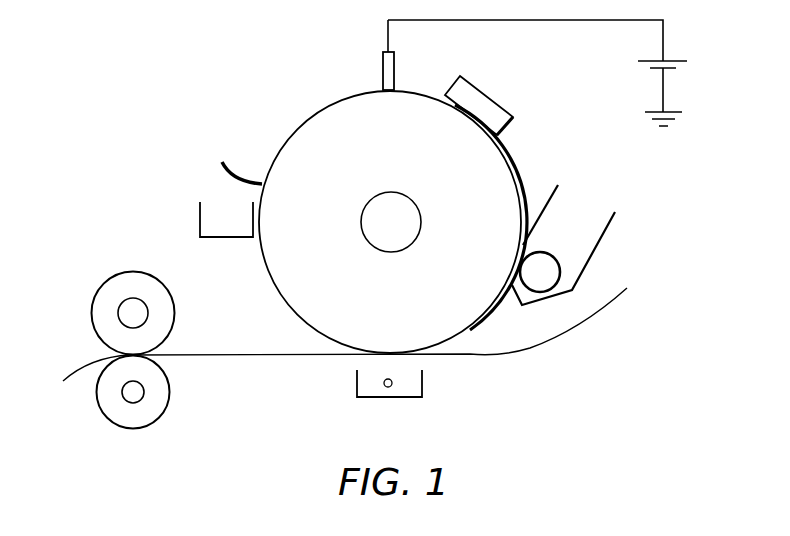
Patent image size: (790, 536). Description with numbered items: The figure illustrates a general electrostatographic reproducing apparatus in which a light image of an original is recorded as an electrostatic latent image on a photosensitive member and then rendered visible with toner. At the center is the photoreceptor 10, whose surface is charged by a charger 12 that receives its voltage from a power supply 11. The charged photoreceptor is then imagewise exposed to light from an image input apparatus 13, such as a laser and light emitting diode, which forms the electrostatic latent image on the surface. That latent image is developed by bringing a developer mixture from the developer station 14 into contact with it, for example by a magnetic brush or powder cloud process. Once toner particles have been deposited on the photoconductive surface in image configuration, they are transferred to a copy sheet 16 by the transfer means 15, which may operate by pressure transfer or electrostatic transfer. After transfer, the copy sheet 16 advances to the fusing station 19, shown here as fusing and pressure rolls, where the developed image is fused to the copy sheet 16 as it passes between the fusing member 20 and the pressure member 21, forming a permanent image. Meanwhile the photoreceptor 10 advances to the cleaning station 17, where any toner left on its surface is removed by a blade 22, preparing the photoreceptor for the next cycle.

The photoreceptor 10 is at (518, 159).
The power supply 11 is at (665, 48).
The charger 12 is at (380, 80).
The image input apparatus 13 is at (492, 97).
The developer station 14 is at (573, 219).
The transfer means 15 is at (425, 378).
The copy sheet 16 is at (580, 322).
The cleaning station 17 is at (207, 176).
The fusing station 19 is at (127, 329).
The fusing member 20 is at (168, 305).
The pressure member 21 is at (168, 390).
The blade 22 is at (238, 176).